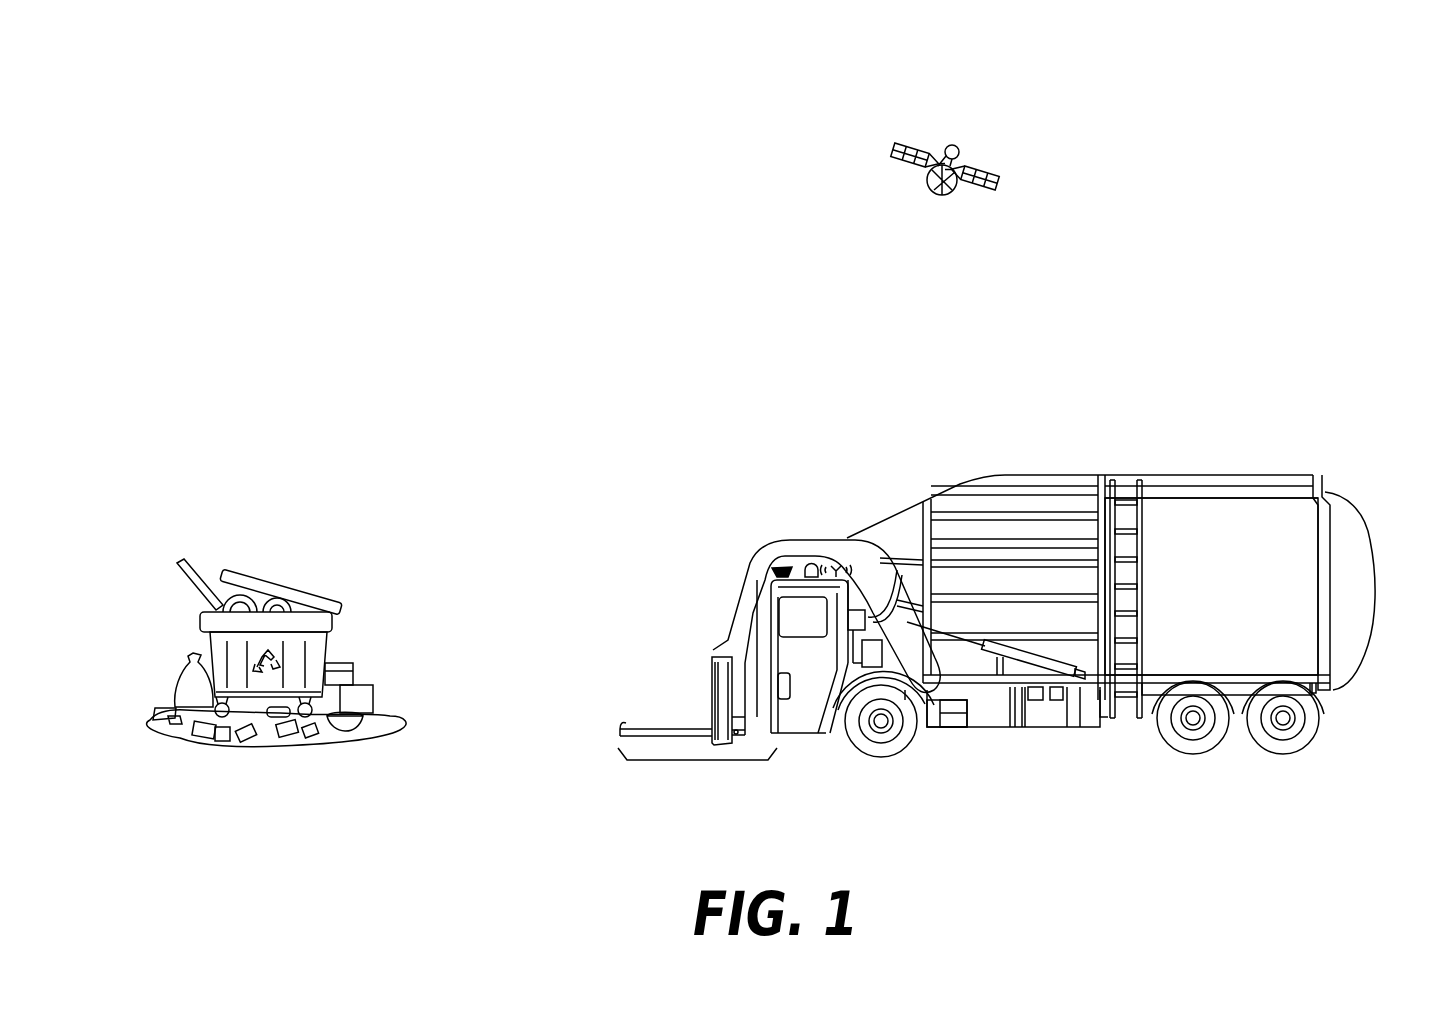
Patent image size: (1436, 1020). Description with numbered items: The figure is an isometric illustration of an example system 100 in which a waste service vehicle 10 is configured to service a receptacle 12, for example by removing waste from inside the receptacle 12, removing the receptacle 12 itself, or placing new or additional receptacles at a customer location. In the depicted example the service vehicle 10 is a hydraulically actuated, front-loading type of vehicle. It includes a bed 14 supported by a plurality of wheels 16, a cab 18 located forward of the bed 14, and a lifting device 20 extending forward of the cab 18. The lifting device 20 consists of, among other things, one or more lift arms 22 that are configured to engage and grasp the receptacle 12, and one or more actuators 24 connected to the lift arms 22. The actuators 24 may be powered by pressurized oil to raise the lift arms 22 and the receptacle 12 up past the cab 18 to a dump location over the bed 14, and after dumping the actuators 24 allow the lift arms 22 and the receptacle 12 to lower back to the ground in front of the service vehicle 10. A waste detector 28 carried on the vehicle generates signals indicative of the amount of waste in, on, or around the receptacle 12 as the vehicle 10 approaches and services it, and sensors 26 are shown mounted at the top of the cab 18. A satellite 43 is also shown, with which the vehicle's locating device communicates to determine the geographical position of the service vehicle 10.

The system 100 is at (1330, 70).
The waste service vehicle 10 is at (1152, 455).
The receptacle 12 is at (237, 647).
The bed 14 is at (1245, 610).
The wheels 16 is at (905, 744).
The cab 18 is at (816, 632).
The lifting device 20 is at (691, 763).
The lift arms 22 is at (740, 612).
The actuators 24 is at (713, 683).
The sensors 26 is at (797, 565).
The waste detector 28 is at (780, 570).
The satellite 43 is at (930, 183).